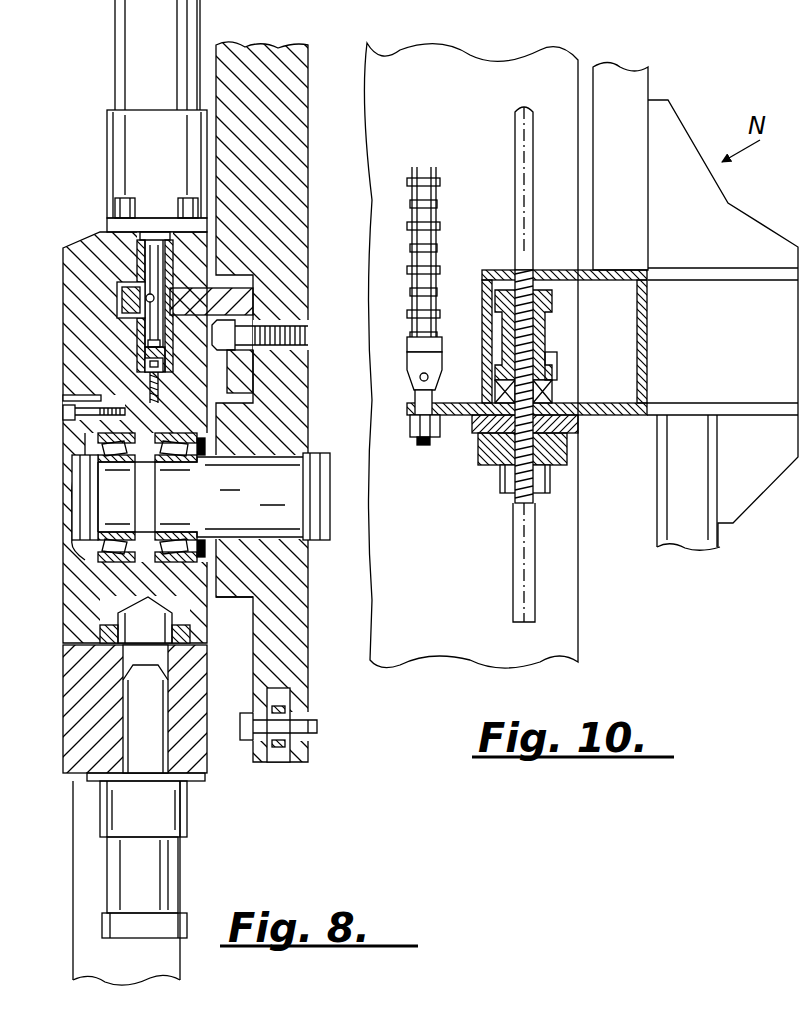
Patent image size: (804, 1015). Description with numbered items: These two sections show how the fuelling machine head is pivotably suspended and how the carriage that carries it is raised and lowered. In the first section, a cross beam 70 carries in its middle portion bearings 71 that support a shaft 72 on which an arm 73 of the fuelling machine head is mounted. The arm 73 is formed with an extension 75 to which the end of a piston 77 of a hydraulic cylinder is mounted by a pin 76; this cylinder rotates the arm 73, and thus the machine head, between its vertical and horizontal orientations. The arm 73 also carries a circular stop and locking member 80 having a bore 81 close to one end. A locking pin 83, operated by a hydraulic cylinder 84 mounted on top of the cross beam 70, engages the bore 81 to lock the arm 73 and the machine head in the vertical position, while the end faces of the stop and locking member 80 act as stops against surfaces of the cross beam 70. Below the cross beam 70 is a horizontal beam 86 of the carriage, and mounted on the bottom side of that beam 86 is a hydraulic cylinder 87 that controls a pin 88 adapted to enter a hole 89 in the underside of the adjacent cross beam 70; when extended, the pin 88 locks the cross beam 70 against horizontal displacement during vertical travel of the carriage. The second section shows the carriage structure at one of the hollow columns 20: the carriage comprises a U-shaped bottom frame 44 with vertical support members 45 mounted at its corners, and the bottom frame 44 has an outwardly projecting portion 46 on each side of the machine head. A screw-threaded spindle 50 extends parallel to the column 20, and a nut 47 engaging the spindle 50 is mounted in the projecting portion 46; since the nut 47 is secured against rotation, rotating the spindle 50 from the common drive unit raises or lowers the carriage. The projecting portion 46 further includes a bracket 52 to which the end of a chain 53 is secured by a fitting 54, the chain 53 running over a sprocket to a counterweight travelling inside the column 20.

In FIG. 8, the hydraulic cylinder 84 is at (115, 42).
In FIG. 8, the arm 73 is at (296, 147).
In FIG. 8, the cross beam 70 is at (80, 246).
In FIG. 8, the locking pin 83 is at (152, 256).
In FIG. 8, the bore 81 is at (146, 298).
In FIG. 8, the stop and locking member 80 is at (248, 298).
In FIG. 8, the bearing 71 is at (105, 441).
In FIG. 8, the shaft 72 is at (285, 487).
In FIG. 8, the extension 75 is at (297, 590).
In FIG. 8, the hole 89 is at (143, 633).
In FIG. 8, the horizontal beam 86 is at (70, 678).
In FIG. 8, the pin 88 is at (137, 731).
In FIG. 8, the hydraulic cylinder 87 is at (160, 869).
In FIG. 8, the piston 77 is at (282, 712).
In FIG. 8, the pin 76 is at (300, 732).
In FIG. 10, the column 20 is at (562, 607).
In FIG. 10, the vertical support member 45 is at (630, 83).
In FIG. 10, the bottom frame 44 is at (745, 420).
In FIG. 10, the chain 53 is at (434, 198).
In FIG. 10, the bracket 52 is at (428, 352).
In FIG. 10, the nut 47 is at (545, 330).
In FIG. 10, the screw-threaded spindle 50 is at (535, 450).
In FIG. 10, the outwardly projecting portion 46 is at (470, 448).
In FIG. 10, the fitting 54 is at (420, 400).